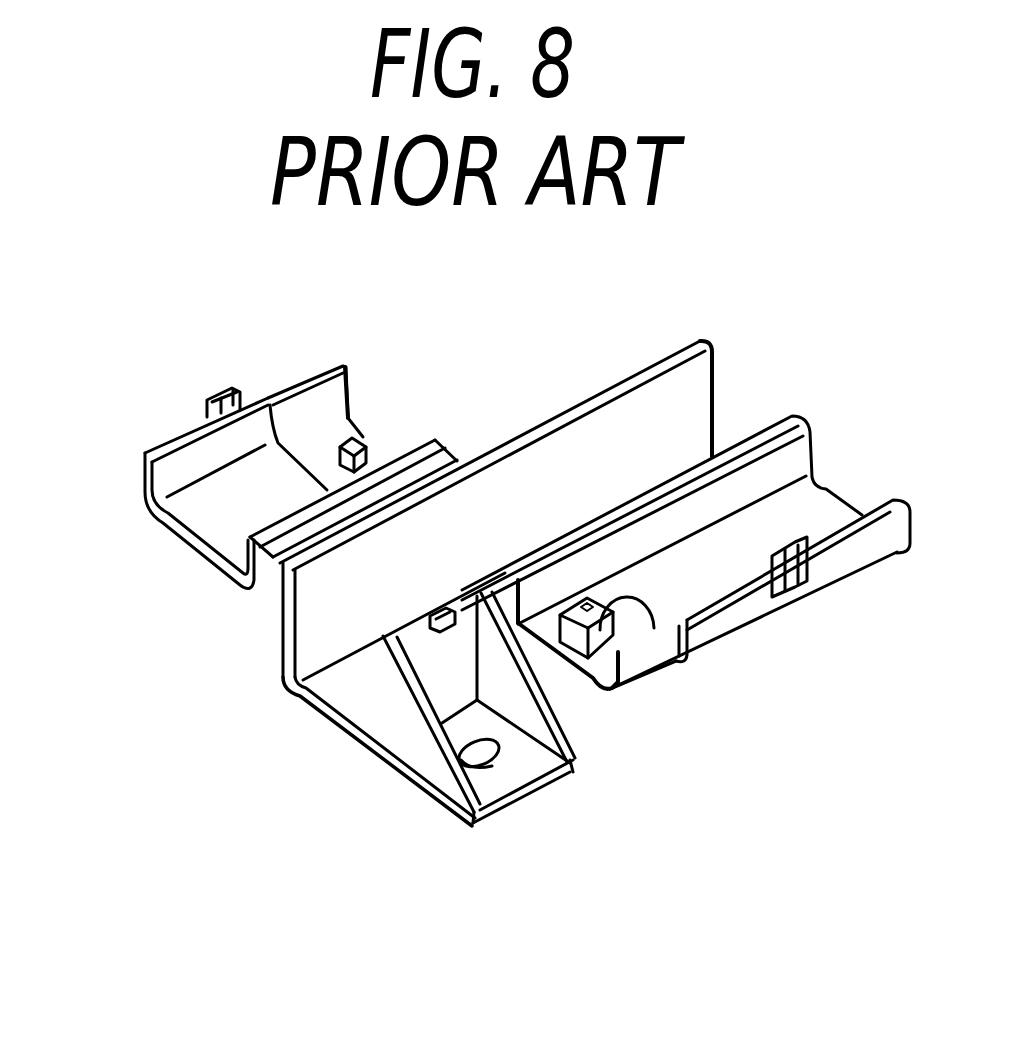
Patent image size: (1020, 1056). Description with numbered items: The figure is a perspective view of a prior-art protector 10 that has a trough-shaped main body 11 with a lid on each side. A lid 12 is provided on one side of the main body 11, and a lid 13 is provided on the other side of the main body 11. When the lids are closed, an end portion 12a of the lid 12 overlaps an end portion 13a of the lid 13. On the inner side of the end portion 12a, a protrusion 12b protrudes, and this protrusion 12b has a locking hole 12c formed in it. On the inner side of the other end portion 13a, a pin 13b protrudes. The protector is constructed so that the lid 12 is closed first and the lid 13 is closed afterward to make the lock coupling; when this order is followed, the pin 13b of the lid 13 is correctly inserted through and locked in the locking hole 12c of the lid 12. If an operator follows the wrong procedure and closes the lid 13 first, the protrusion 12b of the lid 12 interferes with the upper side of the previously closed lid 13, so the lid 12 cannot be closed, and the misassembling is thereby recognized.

The protector 10 is at (338, 831).
The trough-shaped main body 11 is at (278, 655).
The lid 12 is at (752, 628).
The end portion of lid 12a is at (636, 678).
The protrusion 12b is at (596, 694).
The locking hole 12c is at (646, 672).
The lid 13 is at (160, 444).
The end portion of lid 13a is at (303, 373).
The pin 13b is at (363, 436).